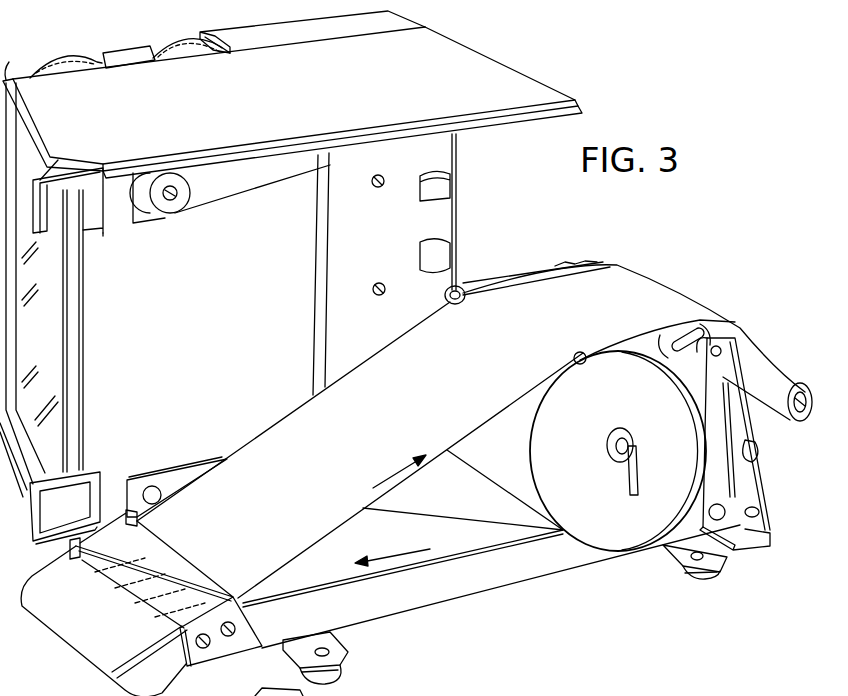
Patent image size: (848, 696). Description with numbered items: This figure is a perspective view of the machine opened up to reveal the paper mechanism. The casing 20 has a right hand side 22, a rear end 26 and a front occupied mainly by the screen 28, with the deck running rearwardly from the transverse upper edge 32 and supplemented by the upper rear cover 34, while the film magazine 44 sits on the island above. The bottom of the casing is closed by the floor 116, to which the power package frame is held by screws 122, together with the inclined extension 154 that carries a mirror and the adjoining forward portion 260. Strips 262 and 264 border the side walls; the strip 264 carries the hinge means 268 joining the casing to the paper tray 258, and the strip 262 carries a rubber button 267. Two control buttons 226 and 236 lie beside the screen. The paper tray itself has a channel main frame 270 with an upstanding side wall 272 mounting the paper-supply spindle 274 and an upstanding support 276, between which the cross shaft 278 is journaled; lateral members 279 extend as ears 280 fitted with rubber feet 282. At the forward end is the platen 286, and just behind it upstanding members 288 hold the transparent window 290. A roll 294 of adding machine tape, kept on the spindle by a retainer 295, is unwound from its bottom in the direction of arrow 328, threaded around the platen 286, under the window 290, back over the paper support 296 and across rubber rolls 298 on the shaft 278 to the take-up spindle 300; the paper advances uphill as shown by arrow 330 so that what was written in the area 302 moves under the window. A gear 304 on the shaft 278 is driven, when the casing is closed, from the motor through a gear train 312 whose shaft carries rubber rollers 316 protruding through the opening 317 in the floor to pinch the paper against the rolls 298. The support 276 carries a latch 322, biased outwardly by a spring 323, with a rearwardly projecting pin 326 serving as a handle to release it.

The casing 20 is at (480, 52).
The right hand side 22 is at (170, 102).
The rear end 26 is at (522, 79).
The screen 28 is at (50, 349).
The transverse upper edge 32 is at (21, 60).
The upper rear cover 34 is at (268, 20).
The film magazine 44 is at (77, 32).
The floor 116 is at (338, 336).
The screws 122 is at (377, 187).
The downward and forward extension of the casing floor 154 is at (323, 313).
The control button 226 is at (72, 222).
The second control button 236 is at (73, 484).
The paper tray 258 is at (470, 598).
The forward portion of the floor 260 is at (203, 330).
The supporting strip 262 is at (264, 162).
The supporting strip 264 is at (176, 463).
The rubber button 267 is at (170, 214).
The hinge means 268 is at (140, 518).
The main frame 270 is at (417, 600).
The upstanding side wall 272 is at (622, 272).
The paper-supply spindle 274 is at (636, 445).
The upstanding support 276 is at (734, 342).
The cross shaft 278 is at (686, 341).
The lateral members 279 is at (330, 631).
The ears 280 is at (341, 657).
The rubber feet 282 is at (332, 678).
The platen 286 is at (140, 683).
The upstanding members 288 is at (70, 550).
The window 290 is at (214, 590).
The roll 294 is at (537, 502).
The retainer 295 is at (630, 479).
The paper support 296 is at (584, 364).
The rubber rolls 298 is at (672, 350).
The take-up spindle 300 is at (793, 416).
The paper area 302 is at (112, 617).
The gear 304 is at (560, 264).
The gear train 312 is at (456, 173).
The rubber rollers 316 is at (437, 199).
The opening 317 is at (457, 222).
The latch 322 is at (770, 542).
The spring 323 is at (706, 478).
The pin 326 is at (772, 517).
The arrow 328 is at (412, 551).
The arrow 330 is at (382, 474).